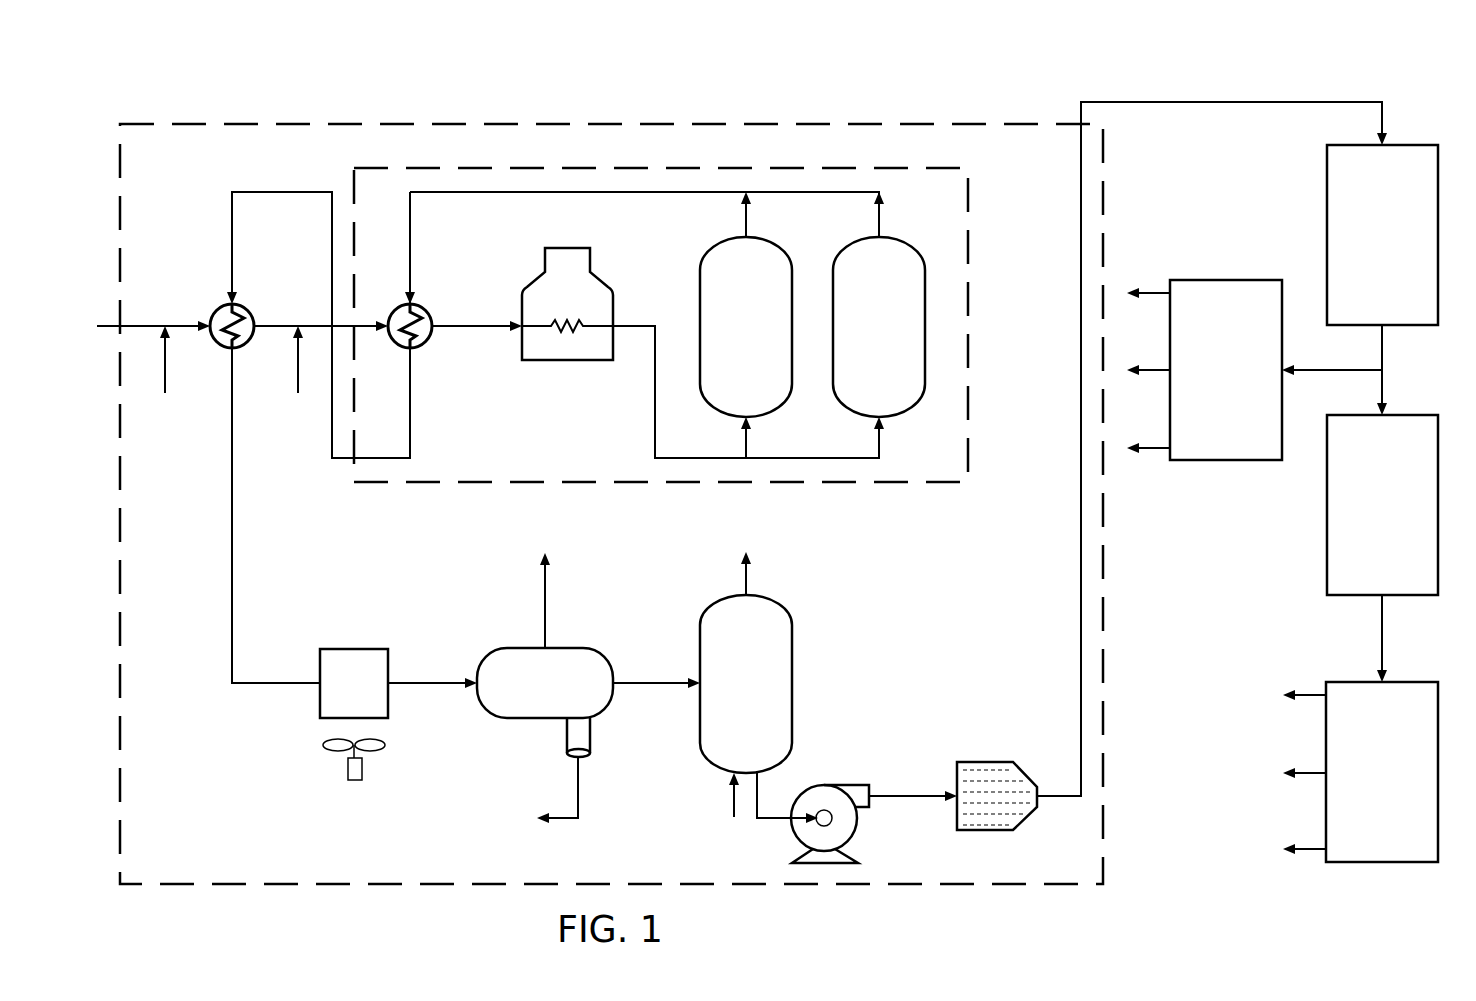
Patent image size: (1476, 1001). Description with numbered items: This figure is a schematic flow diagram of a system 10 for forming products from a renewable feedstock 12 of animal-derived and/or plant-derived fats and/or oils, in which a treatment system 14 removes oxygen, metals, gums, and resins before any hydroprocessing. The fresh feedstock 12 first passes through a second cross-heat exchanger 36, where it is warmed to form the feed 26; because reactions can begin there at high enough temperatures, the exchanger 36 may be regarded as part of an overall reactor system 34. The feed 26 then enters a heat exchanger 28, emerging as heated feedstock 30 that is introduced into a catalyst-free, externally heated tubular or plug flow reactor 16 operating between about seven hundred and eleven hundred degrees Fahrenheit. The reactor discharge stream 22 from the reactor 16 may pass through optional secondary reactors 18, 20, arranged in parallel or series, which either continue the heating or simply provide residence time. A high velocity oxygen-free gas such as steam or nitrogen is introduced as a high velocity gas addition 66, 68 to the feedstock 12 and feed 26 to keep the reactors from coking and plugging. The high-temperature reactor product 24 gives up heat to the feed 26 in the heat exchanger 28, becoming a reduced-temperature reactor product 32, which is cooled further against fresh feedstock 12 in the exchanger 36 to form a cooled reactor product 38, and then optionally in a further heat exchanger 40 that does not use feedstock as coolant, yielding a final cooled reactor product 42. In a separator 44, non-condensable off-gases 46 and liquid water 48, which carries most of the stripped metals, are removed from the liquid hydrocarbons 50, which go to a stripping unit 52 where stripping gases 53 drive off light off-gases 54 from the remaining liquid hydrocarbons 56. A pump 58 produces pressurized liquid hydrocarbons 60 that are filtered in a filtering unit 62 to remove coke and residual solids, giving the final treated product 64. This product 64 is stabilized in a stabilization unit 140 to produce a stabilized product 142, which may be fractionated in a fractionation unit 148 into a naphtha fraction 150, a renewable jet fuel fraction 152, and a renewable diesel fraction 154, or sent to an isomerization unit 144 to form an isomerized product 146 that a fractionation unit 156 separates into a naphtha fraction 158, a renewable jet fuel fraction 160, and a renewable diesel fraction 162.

The system 10 is at (506, 70).
The feedstock 12 is at (153, 322).
The treatment system 14 is at (442, 113).
The reactor 16 is at (520, 340).
The secondary reactor 18 is at (732, 342).
The secondary reactor 20 is at (865, 342).
The reactor discharge stream 22 is at (652, 388).
The high-temperature reactor product 24 is at (645, 195).
The feed 26 is at (285, 322).
The heat exchanger 28 is at (398, 310).
The heated feedstock 30 is at (475, 322).
The reduced-temperature reactor product 32 is at (280, 190).
The reactor system 34 is at (980, 283).
The second cross-heat exchanger 36 is at (220, 310).
The cooled reactor product 38 is at (277, 686).
The heat exchanger 40 is at (340, 698).
The final cooled reactor product 42 is at (430, 686).
The separator 44 is at (531, 698).
The non-condensable off-gases 46 is at (542, 600).
The liquid water 48 is at (582, 785).
The liquid hydrocarbons 50 is at (655, 686).
The stripping unit 52 is at (732, 698).
The stripping gases 53 is at (730, 800).
The light off-gases 54 is at (752, 573).
The liquid hydrocarbons 56 is at (775, 822).
The pump 58 is at (857, 828).
The pressurized liquid hydrocarbons 60 is at (925, 794).
The filtering unit 62 is at (992, 762).
The final treated product 64 is at (1235, 102).
The high velocity gas addition 66 is at (168, 372).
The high velocity gas addition 68 is at (295, 372).
The stabilization unit 140 is at (1415, 145).
The stabilized product 142 is at (1385, 360).
The isomerization unit 144 is at (1325, 505).
The isomerized product 146 is at (1385, 640).
The fractionation unit 148 is at (1225, 280).
The naphtha fraction 150 is at (1150, 290).
The renewable jet fuel fraction 152 is at (1153, 368).
The renewable diesel fraction 154 is at (1153, 445).
The fractionation unit 156 is at (1393, 862).
The naphtha fraction 158 is at (1308, 700).
The renewable jet fuel fraction 160 is at (1308, 778).
The renewable diesel fraction 162 is at (1308, 855).